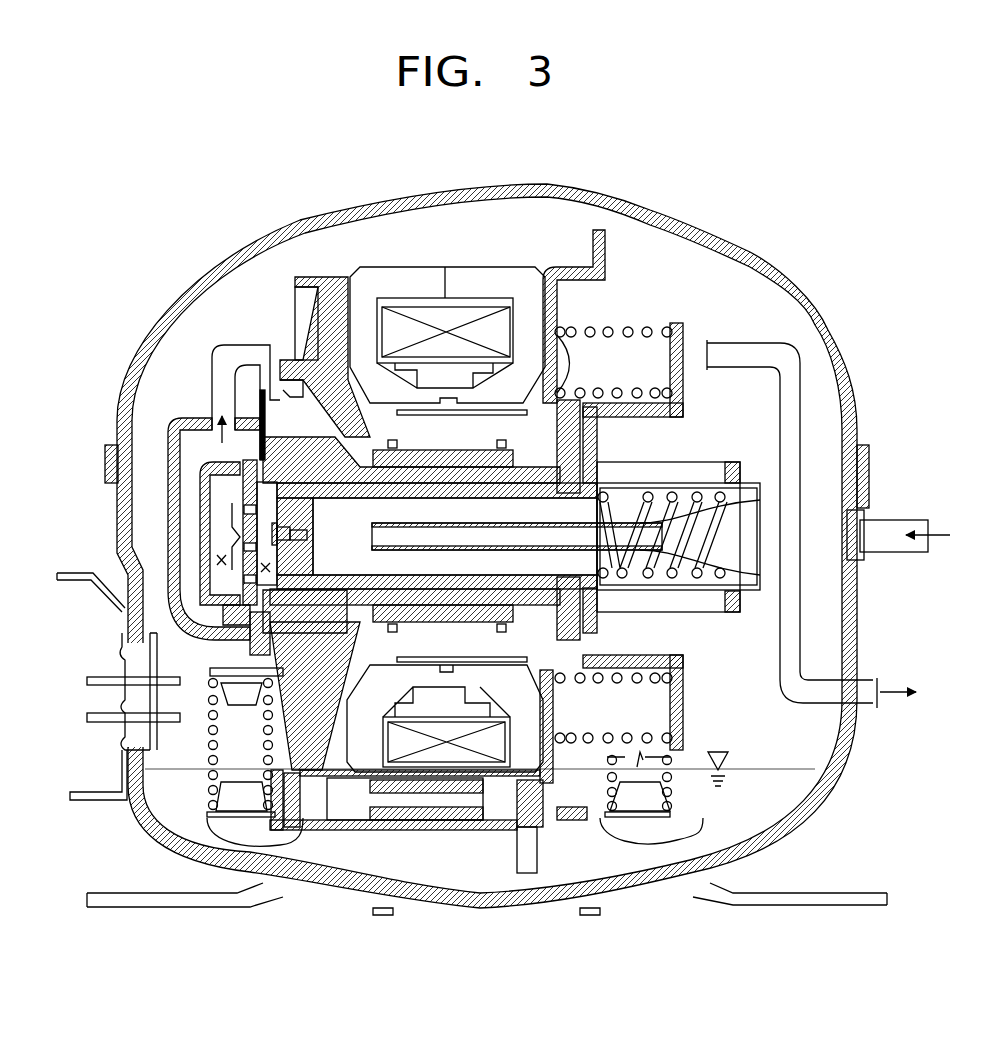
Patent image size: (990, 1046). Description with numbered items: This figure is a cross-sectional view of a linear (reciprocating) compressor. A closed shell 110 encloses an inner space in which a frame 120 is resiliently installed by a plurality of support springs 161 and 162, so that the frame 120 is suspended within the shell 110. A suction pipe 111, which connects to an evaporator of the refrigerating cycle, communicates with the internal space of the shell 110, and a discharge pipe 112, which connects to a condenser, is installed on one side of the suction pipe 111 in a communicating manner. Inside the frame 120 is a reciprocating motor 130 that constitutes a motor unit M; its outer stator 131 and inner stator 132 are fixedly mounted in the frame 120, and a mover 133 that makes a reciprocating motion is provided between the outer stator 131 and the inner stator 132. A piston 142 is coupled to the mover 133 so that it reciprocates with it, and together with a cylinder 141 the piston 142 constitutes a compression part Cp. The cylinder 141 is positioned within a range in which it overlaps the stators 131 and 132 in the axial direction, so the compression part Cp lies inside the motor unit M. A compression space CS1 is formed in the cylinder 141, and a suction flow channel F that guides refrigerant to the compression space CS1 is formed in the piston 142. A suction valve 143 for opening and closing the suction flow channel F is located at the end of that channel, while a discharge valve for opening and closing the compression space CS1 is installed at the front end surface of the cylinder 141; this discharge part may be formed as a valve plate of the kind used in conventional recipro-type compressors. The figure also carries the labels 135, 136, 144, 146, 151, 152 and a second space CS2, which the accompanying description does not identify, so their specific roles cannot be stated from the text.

The shell 110 is at (797, 292).
The suction pipe 111 is at (890, 543).
The discharge pipe 112 is at (867, 680).
The frame 120 is at (333, 287).
The reciprocating motor 130 is at (446, 439).
The outer stator 131 is at (423, 280).
The inner stator 132 is at (460, 433).
The mover 133 is at (445, 410).
The coil 135 is at (400, 330).
The bearing 136 is at (478, 655).
The cylinder 141 is at (265, 440).
The piston 142 is at (275, 472).
The suction valve 143 is at (277, 507).
The discharge cover 144 is at (247, 530).
The support bracket 146 is at (150, 645).
The resonance spring 151 is at (647, 330).
The spring supporter 152 is at (713, 462).
The support spring 161 is at (210, 797).
The support spring 162 is at (667, 812).
The motor unit M is at (524, 262).
The compression part Cp is at (292, 428).
The suction flow channel F is at (326, 546).
The compression space CS1 is at (266, 568).
The second compression space CS2 is at (222, 560).